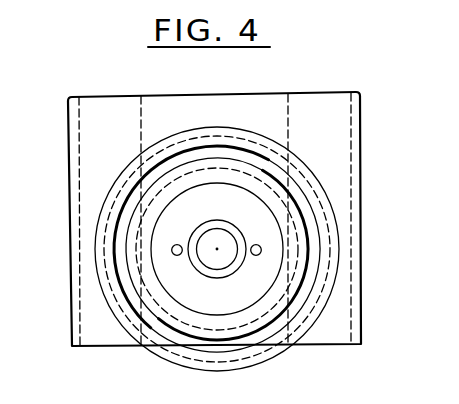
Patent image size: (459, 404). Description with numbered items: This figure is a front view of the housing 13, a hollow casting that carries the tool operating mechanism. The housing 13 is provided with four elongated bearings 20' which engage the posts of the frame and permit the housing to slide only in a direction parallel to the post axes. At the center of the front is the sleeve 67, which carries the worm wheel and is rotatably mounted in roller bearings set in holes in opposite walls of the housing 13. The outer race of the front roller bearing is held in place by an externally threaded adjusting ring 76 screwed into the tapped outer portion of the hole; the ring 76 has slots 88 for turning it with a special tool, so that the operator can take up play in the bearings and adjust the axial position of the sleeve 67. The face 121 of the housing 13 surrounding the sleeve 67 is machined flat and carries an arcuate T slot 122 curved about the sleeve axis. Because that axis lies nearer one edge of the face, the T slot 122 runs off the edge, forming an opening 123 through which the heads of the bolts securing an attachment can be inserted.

The housing 13 is at (237, 108).
The elongated bearings 20' is at (207, 219).
The face 121 is at (168, 133).
The arcuate T slot 122 is at (118, 214).
The opening 123 is at (195, 347).
The adjusting ring 76 is at (219, 297).
The sleeve 67 is at (243, 206).
The slots 88 is at (182, 245).